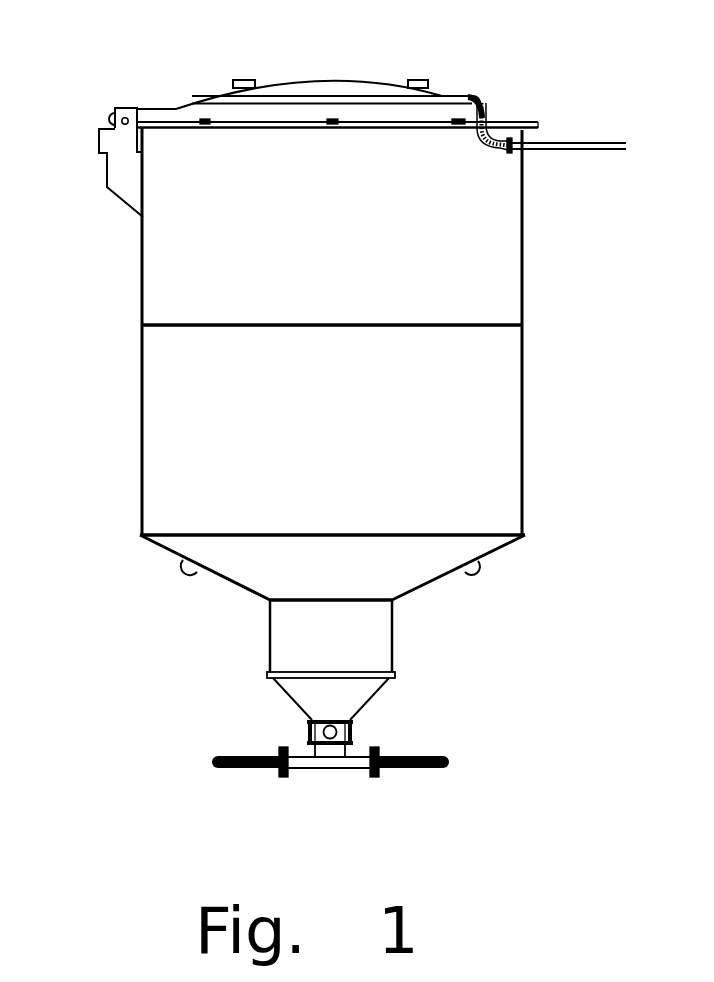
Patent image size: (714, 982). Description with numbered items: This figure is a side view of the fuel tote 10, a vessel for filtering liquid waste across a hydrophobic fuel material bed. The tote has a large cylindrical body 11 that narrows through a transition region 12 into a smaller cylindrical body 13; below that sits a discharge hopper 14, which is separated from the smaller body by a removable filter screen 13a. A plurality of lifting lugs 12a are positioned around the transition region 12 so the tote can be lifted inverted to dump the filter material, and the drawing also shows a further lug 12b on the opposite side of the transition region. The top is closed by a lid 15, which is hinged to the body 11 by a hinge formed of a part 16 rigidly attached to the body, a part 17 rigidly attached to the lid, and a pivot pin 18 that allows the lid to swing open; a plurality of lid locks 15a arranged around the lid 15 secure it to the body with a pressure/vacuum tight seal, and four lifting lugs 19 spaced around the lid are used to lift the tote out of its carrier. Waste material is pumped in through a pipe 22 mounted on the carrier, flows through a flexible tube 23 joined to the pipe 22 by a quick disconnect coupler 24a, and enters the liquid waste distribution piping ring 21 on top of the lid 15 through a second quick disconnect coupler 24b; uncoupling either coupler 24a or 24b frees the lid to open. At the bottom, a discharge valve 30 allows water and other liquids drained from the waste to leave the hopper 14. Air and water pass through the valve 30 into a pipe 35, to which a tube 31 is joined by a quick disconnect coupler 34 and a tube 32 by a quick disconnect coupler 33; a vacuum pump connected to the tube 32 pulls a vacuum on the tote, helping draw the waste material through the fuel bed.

The fuel tote 10 is at (640, 420).
The cylindrical body 11 is at (522, 307).
The transition region 12 is at (423, 590).
The lifting lugs 12a is at (479, 572).
The lifting eye 12b is at (183, 570).
The smaller cylindrical body 13 is at (268, 620).
The removable filter screen 13a is at (385, 677).
The discharge hopper 14 is at (290, 700).
The lid 15 is at (347, 78).
The lid locks 15a is at (457, 122).
The hinge part 16 is at (118, 157).
The hinge part 17 is at (150, 108).
The pivot pin 18 is at (123, 116).
The lifting lugs 19 is at (245, 78).
The liquid waste distribution piping ring 21 is at (453, 101).
The pipe 22 is at (580, 152).
The flexible tube 23 is at (483, 120).
The quick disconnect coupler 24a is at (513, 157).
The quick disconnect coupler 24b is at (484, 104).
The discharge valve 30 is at (352, 742).
The tube 31 is at (218, 773).
The tube 32 is at (437, 772).
The quick disconnect coupler 33 is at (375, 777).
The quick disconnect coupler 34 is at (282, 777).
The pipe 35 is at (327, 762).